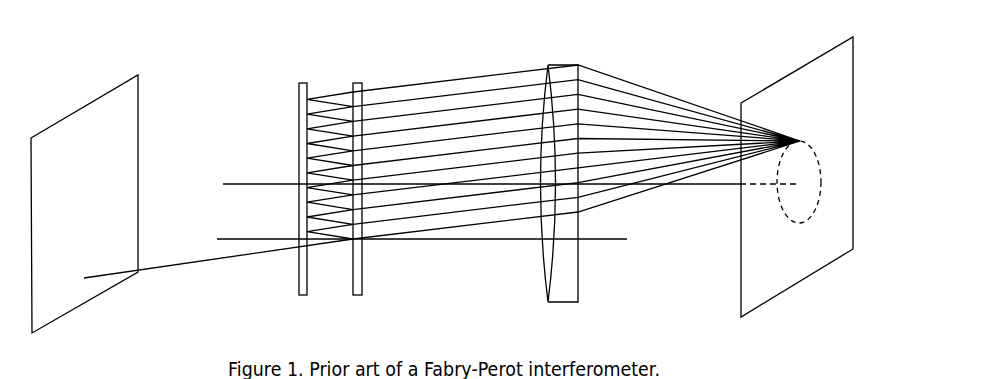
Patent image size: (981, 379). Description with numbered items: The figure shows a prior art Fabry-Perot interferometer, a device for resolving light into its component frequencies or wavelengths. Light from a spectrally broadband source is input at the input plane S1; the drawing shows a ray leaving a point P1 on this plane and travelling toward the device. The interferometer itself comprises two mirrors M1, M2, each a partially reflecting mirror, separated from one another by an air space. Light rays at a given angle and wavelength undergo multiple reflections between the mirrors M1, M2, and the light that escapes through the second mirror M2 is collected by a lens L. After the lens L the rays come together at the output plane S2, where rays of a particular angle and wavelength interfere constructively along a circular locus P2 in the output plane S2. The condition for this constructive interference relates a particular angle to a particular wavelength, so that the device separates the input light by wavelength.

The input plane S1 is at (84, 204).
The source point P1 is at (212, 268).
The first mirror M1 is at (295, 175).
The second mirror M2 is at (363, 174).
The lens L is at (560, 196).
The output plane S2 is at (797, 176).
The circular locus P2 is at (800, 167).